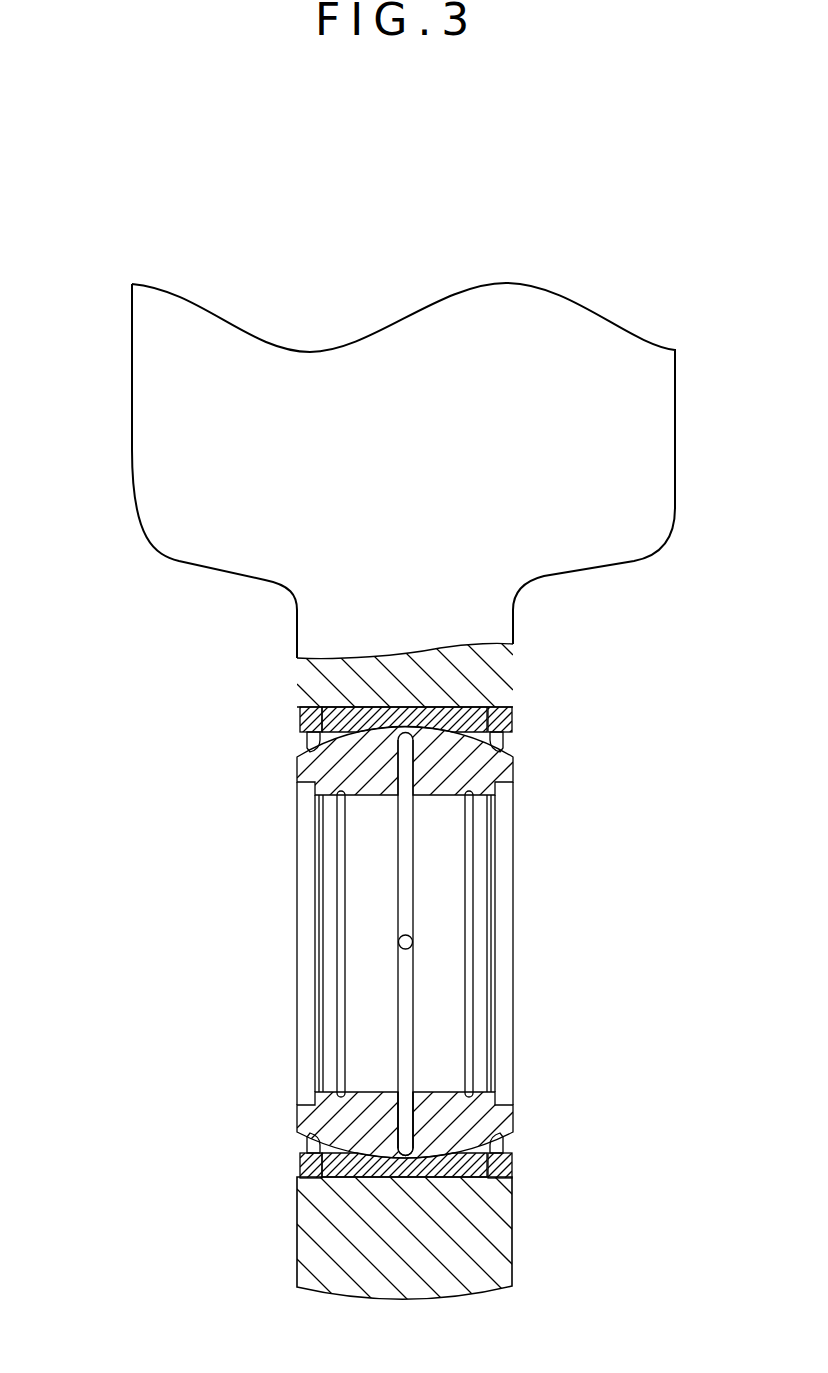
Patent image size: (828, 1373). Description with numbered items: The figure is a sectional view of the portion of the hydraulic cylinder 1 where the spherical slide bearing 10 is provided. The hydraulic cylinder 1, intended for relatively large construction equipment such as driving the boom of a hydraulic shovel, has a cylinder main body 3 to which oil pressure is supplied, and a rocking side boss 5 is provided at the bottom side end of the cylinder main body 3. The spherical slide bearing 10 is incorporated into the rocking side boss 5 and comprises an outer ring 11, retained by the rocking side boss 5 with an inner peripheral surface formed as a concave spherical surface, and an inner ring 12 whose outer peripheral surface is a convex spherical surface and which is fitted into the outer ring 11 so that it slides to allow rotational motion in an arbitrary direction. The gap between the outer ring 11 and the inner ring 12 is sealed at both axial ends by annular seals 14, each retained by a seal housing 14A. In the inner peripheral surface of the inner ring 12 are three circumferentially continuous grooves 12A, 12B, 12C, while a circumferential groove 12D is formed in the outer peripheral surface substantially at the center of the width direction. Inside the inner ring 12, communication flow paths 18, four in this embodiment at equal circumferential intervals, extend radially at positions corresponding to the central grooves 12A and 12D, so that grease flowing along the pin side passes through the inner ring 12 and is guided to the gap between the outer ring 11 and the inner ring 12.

The hydraulic cylinder 1 is at (155, 582).
The cylinder main body 3 is at (147, 440).
The rocking side boss 5 is at (300, 1257).
The spherical slide bearing 10 is at (235, 967).
The outer ring 11 is at (357, 1180).
The inner ring 12 is at (310, 768).
The groove 12A is at (402, 923).
The groove 12B is at (468, 888).
The groove 12C is at (345, 882).
The circumferential groove 12D is at (440, 1118).
The seal 14 is at (313, 1145).
The seal housing 14A is at (300, 1163).
The communication flow path 18 is at (408, 1109).